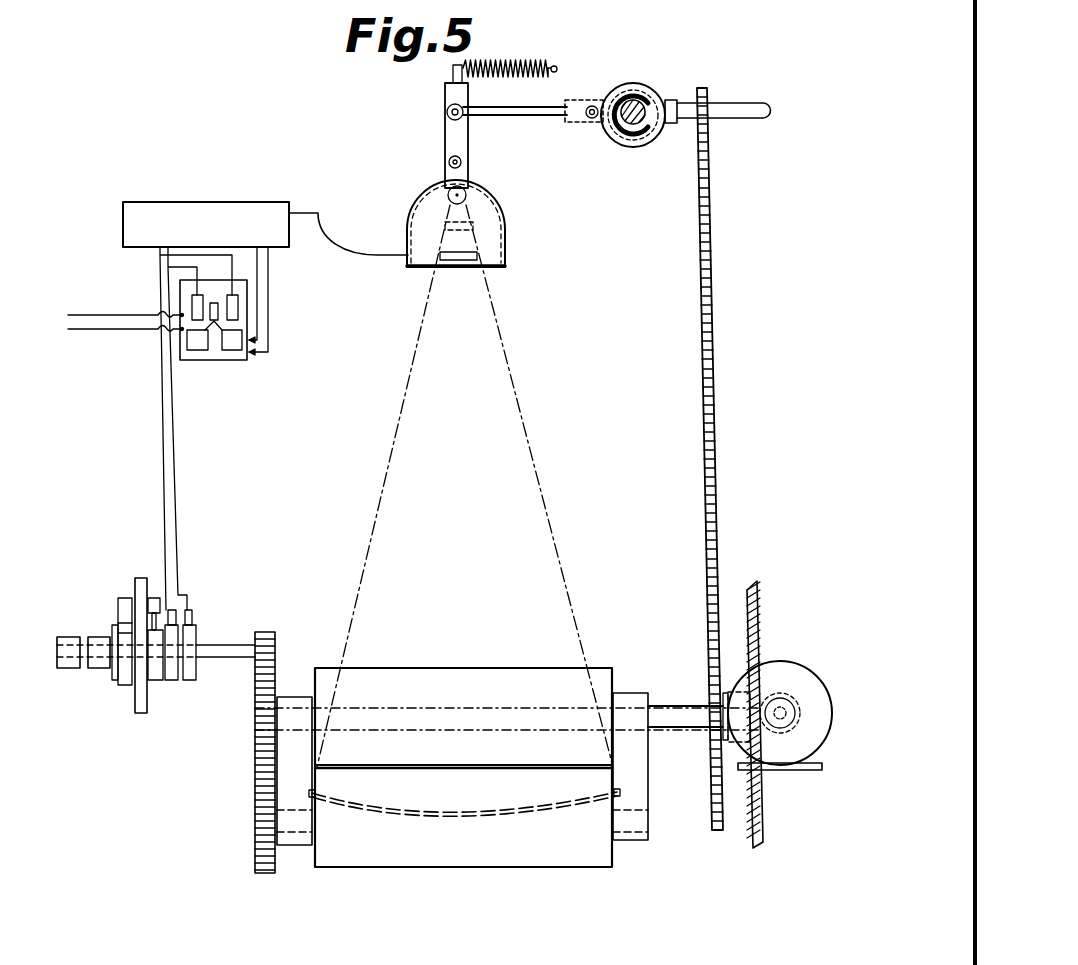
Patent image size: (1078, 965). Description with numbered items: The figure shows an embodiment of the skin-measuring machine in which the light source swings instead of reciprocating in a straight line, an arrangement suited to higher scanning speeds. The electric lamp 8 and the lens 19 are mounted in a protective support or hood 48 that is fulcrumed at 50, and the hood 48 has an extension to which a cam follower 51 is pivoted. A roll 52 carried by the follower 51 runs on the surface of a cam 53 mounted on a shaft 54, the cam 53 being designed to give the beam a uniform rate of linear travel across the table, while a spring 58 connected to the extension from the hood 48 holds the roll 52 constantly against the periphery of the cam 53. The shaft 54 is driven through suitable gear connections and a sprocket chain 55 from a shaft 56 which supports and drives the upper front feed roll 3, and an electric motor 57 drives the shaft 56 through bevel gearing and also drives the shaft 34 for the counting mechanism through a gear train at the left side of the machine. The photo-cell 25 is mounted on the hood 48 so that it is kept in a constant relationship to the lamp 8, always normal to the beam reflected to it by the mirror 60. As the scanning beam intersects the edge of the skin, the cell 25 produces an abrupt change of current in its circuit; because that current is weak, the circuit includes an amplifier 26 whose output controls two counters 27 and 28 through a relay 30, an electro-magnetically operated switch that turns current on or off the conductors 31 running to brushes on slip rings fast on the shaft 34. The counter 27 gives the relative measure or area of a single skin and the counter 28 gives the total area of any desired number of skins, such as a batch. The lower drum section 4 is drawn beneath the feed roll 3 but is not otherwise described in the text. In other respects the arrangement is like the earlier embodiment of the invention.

The upper front feed roll 3 is at (602, 670).
The lower drum section 4 is at (590, 850).
The incandescent lamp 8 is at (467, 198).
The lens 19 is at (474, 227).
The photo-cell 25 is at (467, 250).
The amplifier 26 is at (192, 203).
The counter 27 is at (100, 637).
The counter 28 is at (70, 637).
The relay 30 is at (212, 360).
The conductors 31 is at (177, 447).
The shaft 34 is at (217, 645).
The hood 48 is at (507, 257).
The fulcrum 50 is at (469, 160).
The cam follower 51 is at (555, 96).
The roll 52 is at (585, 123).
The cam 53 is at (642, 147).
The shaft 54 is at (627, 98).
The sprocket chain 55 is at (713, 302).
The shaft 56 is at (678, 707).
The electric motor 57 is at (805, 672).
The spring 58 is at (493, 62).
The mirror 60 is at (403, 815).